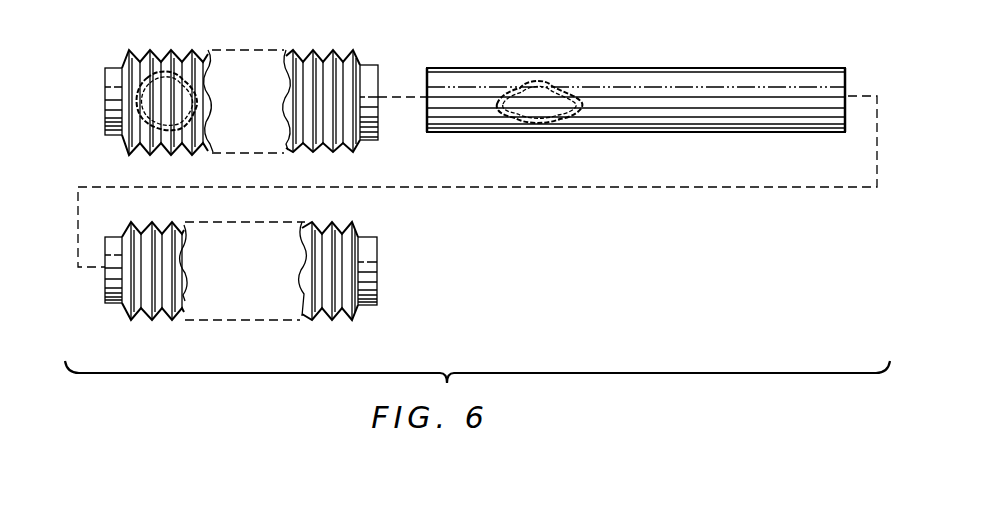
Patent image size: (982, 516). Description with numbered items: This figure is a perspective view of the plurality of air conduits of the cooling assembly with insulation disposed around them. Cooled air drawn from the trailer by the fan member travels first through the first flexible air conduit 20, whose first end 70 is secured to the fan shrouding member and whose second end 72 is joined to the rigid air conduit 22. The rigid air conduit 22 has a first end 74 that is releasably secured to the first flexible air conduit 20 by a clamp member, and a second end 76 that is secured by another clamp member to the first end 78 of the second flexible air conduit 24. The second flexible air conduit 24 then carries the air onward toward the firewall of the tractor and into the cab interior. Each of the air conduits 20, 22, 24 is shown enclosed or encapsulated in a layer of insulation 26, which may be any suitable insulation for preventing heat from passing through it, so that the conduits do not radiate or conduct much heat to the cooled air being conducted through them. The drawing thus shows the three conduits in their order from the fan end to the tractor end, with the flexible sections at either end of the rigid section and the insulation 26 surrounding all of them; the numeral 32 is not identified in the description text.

The first flexible air conduit 20 is at (175, 54).
The rigid air conduit 22 is at (620, 67).
The second flexible air conduit 24 is at (105, 273).
The layer of insulation 26 is at (105, 65).
The fitting assembly 32 is at (243, 91).
The first end of the first flexible air conduit 70 is at (354, 62).
The second end of the first flexible air conduit 72 is at (105, 105).
The first end of the rigid air conduit 74 is at (846, 72).
The second end of the rigid air conduit 76 is at (422, 123).
The first end of the second flexible air conduit 78 is at (378, 275).